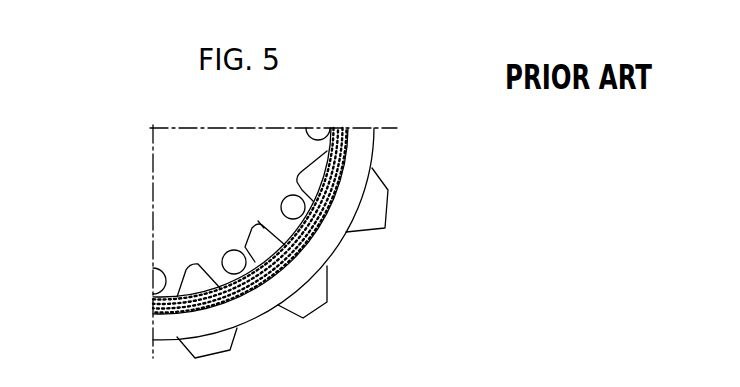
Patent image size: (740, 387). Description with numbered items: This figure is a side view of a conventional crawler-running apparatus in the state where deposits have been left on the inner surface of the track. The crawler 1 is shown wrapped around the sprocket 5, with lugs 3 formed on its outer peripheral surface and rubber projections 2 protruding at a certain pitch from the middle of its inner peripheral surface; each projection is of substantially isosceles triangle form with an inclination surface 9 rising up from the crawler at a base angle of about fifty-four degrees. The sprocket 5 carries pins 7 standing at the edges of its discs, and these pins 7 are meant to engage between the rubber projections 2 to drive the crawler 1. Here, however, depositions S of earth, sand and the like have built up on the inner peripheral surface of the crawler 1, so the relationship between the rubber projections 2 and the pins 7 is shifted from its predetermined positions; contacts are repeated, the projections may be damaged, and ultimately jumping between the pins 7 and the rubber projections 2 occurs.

The crawler 1 is at (363, 143).
The rubber projections 2 is at (307, 180).
The lugs 3 is at (373, 218).
The sprocket 5 is at (187, 159).
The pins 7 is at (295, 208).
The inclination surface 9 is at (176, 278).
The depositions S is at (344, 131).